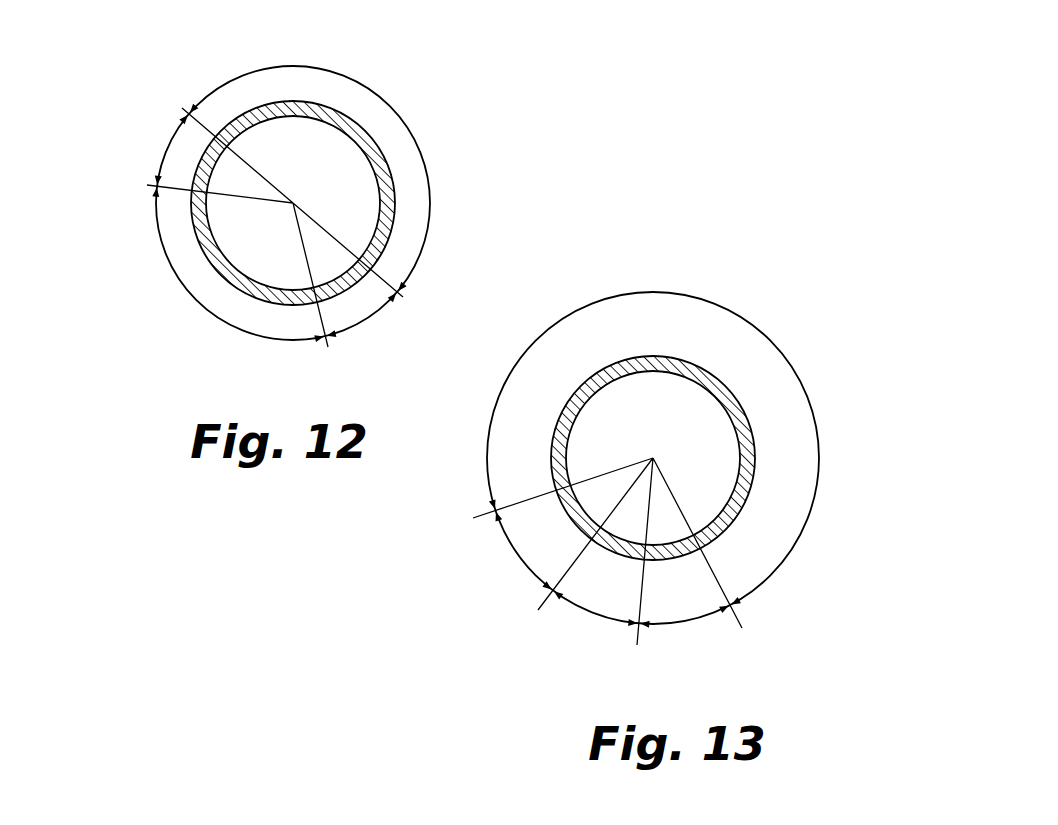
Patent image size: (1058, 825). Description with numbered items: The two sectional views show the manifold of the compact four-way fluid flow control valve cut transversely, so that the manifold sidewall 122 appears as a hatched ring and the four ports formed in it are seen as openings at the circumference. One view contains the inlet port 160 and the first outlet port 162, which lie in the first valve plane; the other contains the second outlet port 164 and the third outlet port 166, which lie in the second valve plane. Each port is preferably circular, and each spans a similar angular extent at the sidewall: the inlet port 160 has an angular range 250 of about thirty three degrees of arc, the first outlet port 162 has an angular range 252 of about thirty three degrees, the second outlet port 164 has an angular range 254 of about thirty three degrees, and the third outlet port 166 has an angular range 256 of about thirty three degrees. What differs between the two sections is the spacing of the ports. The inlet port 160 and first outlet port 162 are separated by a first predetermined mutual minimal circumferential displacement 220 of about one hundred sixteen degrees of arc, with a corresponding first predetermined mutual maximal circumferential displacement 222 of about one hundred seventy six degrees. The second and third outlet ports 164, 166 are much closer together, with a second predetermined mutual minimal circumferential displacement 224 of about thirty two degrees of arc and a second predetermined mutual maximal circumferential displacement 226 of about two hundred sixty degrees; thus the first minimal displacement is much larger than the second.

In FIG. 12, the manifold sidewall 122 is at (390, 177).
In FIG. 13, the manifold sidewall 122 is at (645, 357).
In FIG. 12, the inlet port 160 is at (343, 283).
In FIG. 12, the first outlet port 162 is at (197, 167).
In FIG. 13, the second outlet port 164 is at (572, 507).
In FIG. 13, the third outlet port 166 is at (677, 553).
In FIG. 12, the first predetermined mutual minimal circumferential displacement 220 is at (190, 297).
In FIG. 12, the first predetermined mutual maximal circumferential displacement 222 is at (383, 102).
In FIG. 13, the second predetermined mutual minimal circumferential displacement 224 is at (588, 613).
In FIG. 13, the second predetermined mutual maximal circumferential displacement 226 is at (722, 302).
In FIG. 12, the angular range of the inlet port 250 is at (363, 288).
In FIG. 12, the angular range of the first outlet port 252 is at (170, 145).
In FIG. 13, the angular range of the second outlet port 254 is at (522, 566).
In FIG. 13, the angular range of the third outlet port 256 is at (687, 620).